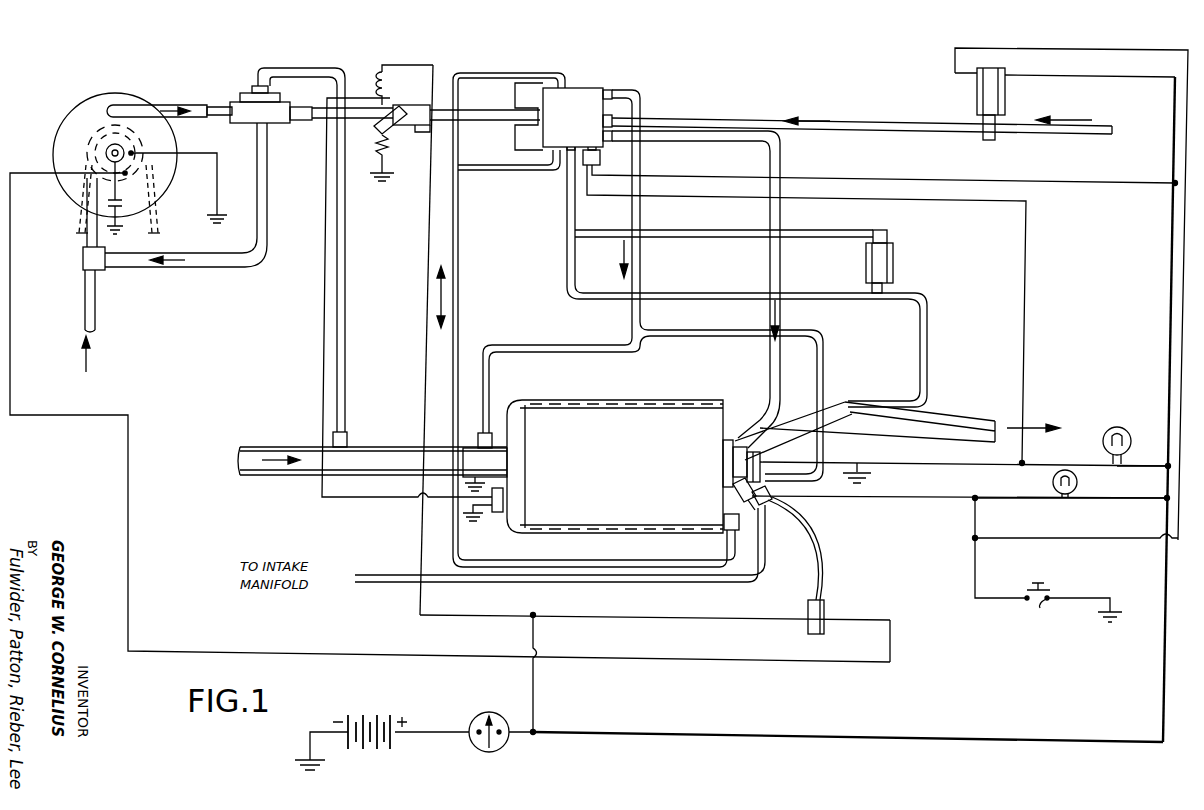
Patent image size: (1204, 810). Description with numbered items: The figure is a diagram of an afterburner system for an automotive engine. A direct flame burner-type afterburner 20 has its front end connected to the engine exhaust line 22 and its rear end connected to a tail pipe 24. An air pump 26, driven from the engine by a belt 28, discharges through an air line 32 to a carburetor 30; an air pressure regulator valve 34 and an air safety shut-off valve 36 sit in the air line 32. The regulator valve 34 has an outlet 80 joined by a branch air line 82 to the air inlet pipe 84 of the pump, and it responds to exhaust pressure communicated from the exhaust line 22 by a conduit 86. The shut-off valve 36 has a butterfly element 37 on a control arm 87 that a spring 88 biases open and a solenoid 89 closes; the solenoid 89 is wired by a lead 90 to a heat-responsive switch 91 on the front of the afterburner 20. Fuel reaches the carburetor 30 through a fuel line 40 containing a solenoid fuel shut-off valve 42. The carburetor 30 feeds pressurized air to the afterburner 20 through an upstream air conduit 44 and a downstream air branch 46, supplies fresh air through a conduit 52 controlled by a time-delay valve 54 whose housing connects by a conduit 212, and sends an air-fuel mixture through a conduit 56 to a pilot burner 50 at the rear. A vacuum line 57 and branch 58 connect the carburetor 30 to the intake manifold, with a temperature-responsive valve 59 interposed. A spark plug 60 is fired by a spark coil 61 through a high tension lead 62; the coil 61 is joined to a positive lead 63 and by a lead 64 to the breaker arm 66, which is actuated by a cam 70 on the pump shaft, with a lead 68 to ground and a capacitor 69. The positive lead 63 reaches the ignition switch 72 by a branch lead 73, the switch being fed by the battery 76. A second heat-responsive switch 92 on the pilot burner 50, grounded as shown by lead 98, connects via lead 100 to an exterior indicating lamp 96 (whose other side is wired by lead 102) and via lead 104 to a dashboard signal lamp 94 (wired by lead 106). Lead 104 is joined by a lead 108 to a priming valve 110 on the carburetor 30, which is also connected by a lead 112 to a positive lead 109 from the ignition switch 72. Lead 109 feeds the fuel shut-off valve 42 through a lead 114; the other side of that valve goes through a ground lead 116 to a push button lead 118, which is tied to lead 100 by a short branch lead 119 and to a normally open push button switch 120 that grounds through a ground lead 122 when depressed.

The afterburner 20 is at (598, 466).
The exhaust line 22 is at (277, 447).
The tail pipe 24 is at (955, 422).
The air pump 26 is at (64, 114).
The belt 28 is at (78, 226).
The carburetor 30 is at (563, 116).
The air line 32 is at (326, 113).
The air pressure regulator valve 34 is at (234, 91).
The air safety shut-off valve 36 is at (419, 134).
The butterfly element 37 is at (414, 104).
The fuel line 40 is at (858, 125).
The fuel shut-off valve 42 is at (975, 90).
The upstream air conduit 44 is at (639, 270).
The downstream air branch 46 is at (745, 336).
The pilot burner 50 is at (724, 462).
The conduit 52 is at (682, 296).
The time-delay valve 54 is at (902, 260).
The conduit 56 is at (781, 272).
The vacuum line 57 is at (455, 300).
The branch 58 is at (520, 172).
The temperature-responsive valve 59 is at (718, 531).
The spark plug 60 is at (768, 506).
The spark coil 61 is at (817, 634).
The high tension lead 62 is at (828, 565).
The positive lead 63 is at (722, 620).
The lead 64 is at (866, 620).
The arm 66 is at (150, 168).
The lead 68 is at (194, 157).
The capacitor 69 is at (103, 203).
The cam 70 is at (104, 154).
The ignition switch 72 is at (10, 357).
The branch lead 73 is at (534, 694).
The automobile battery 76 is at (380, 750).
The outlet 80 is at (268, 128).
The branch air line 82 is at (267, 205).
The air inlet pipe 84 is at (88, 241).
The conduit 86 is at (343, 360).
The control arm 87 is at (380, 128).
The spring 88 is at (384, 158).
The solenoid 89 is at (386, 92).
The lead 90 is at (325, 299).
The heat-responsive switch 91 is at (425, 300).
The second heat-responsive switch 92 is at (734, 480).
The dashboard-located signal lamp 94 is at (1113, 428).
The exterior indicating lamp 96 is at (1053, 485).
The lead 98 is at (872, 470).
The lead 100 is at (895, 498).
The lead 102 is at (1092, 500).
The lead 104 is at (933, 466).
The lead 106 is at (1145, 467).
The lead 108 is at (690, 198).
The positive lead 109 is at (1164, 683).
The priming valve 110 is at (605, 156).
The lead 112 is at (815, 180).
The lead 114 is at (1176, 157).
The ground lead 116 is at (1018, 50).
The push button lead 118 is at (972, 568).
The short branch lead 119 is at (973, 523).
The push button switch 120 is at (1038, 608).
The ground lead 122 is at (1082, 597).
The conduit 212 is at (830, 232).